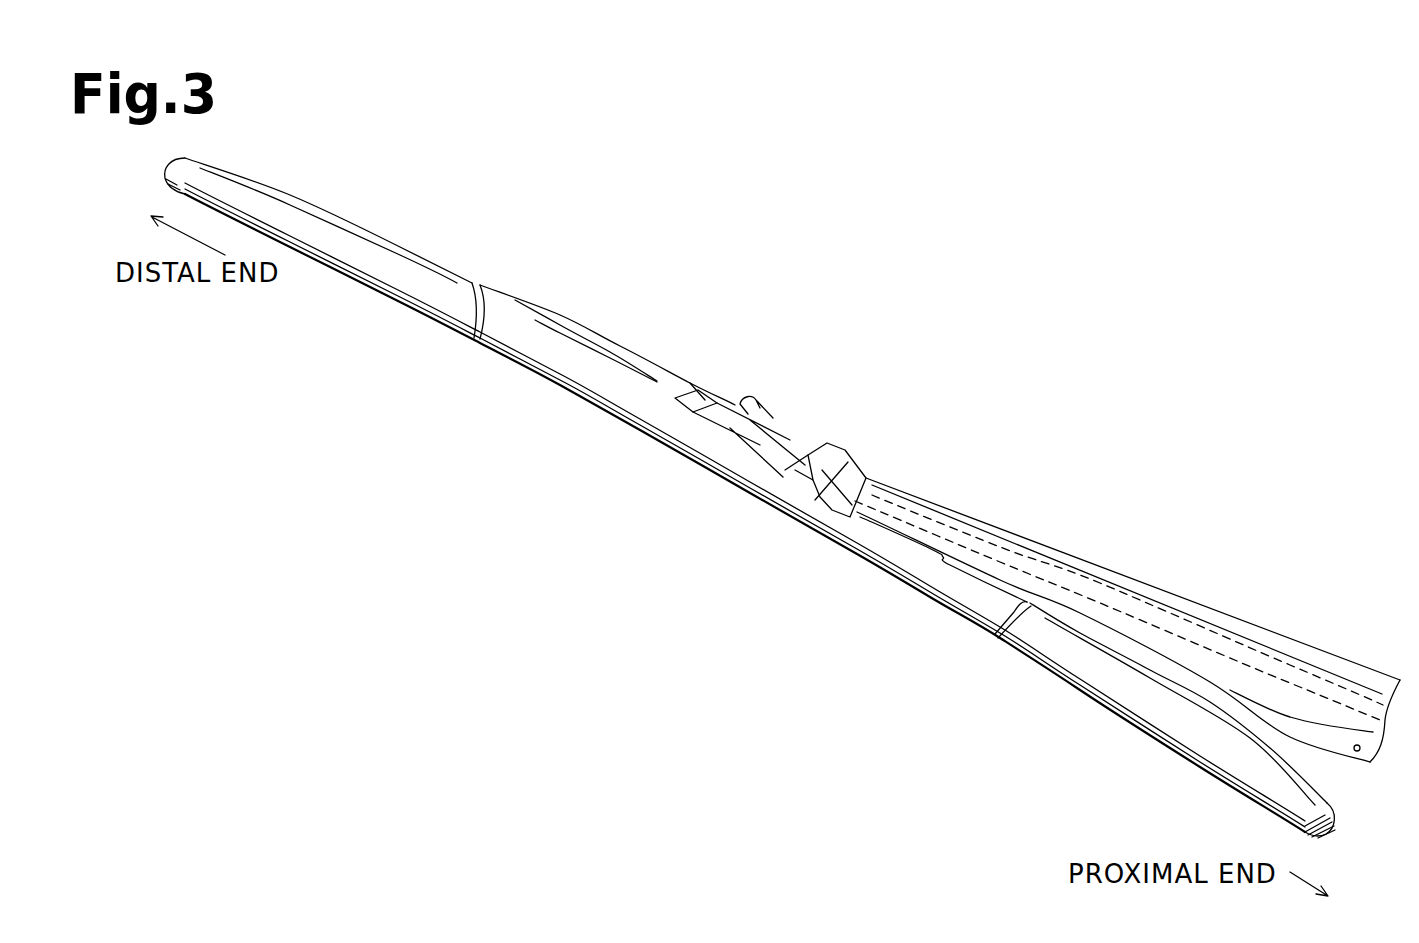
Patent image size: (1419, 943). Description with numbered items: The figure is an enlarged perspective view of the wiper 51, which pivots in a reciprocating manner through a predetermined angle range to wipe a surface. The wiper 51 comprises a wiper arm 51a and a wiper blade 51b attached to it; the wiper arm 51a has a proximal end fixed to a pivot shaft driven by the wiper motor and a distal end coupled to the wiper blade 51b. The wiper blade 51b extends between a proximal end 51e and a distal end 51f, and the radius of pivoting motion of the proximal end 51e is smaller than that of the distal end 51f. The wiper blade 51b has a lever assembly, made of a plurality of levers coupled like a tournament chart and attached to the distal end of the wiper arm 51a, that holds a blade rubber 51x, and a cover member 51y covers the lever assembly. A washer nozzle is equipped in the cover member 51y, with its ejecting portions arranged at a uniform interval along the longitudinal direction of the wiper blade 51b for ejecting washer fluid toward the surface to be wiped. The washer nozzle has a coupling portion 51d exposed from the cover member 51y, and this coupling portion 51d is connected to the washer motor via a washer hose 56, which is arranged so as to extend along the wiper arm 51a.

The wiper 51 is at (704, 262).
The wiper arm 51a is at (1150, 565).
The wiper blade 51b is at (500, 299).
The coupling portion 51d is at (752, 402).
The proximal end 51e is at (1337, 801).
The distal end 51f is at (178, 161).
The blade rubber 51x is at (1325, 846).
The cover member 51y is at (418, 293).
The washer hose 56 is at (1023, 546).